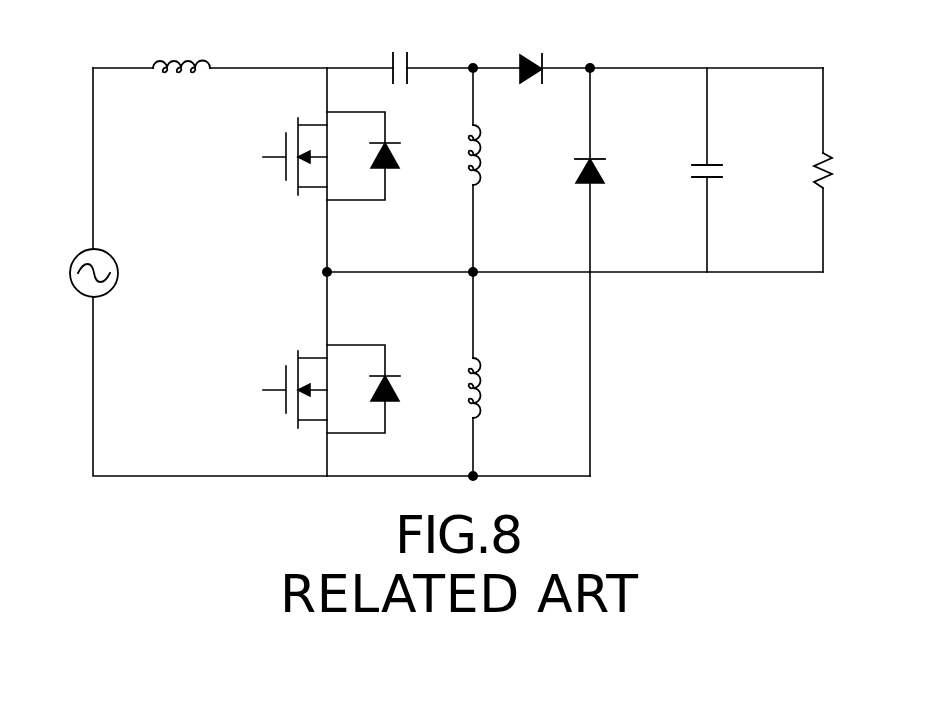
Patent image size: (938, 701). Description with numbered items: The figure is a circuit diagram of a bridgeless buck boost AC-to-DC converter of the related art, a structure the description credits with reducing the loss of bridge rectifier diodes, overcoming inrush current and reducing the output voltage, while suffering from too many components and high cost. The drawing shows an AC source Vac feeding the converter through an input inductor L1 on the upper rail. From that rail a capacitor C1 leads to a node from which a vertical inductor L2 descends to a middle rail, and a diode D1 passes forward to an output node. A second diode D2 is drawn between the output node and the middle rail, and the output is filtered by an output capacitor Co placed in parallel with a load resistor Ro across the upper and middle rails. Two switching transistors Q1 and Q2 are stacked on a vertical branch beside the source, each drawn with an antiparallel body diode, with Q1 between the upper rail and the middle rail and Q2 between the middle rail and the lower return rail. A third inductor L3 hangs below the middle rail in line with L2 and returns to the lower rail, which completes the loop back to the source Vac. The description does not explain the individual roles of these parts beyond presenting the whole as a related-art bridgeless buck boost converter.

The input inductor L1 is at (181, 82).
The first switching transistor Q1 is at (327, 149).
The capacitor C1 is at (400, 53).
The first diode D1 is at (531, 53).
The second inductor L2 is at (459, 155).
The second diode D2 is at (608, 173).
The output capacitor Co is at (726, 173).
The output load resistor Ro is at (843, 171).
The AC voltage source Vac is at (70, 273).
The second switching transistor Q2 is at (327, 382).
The third inductor L3 is at (459, 388).